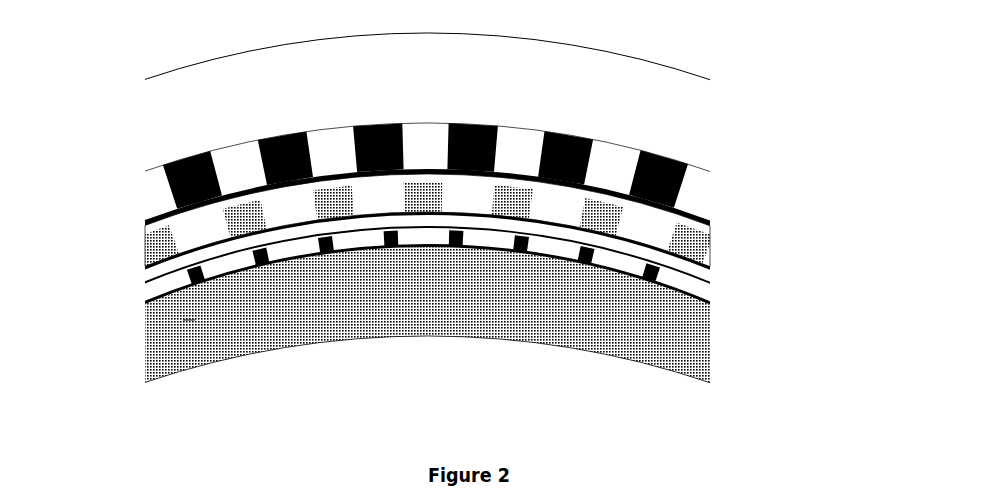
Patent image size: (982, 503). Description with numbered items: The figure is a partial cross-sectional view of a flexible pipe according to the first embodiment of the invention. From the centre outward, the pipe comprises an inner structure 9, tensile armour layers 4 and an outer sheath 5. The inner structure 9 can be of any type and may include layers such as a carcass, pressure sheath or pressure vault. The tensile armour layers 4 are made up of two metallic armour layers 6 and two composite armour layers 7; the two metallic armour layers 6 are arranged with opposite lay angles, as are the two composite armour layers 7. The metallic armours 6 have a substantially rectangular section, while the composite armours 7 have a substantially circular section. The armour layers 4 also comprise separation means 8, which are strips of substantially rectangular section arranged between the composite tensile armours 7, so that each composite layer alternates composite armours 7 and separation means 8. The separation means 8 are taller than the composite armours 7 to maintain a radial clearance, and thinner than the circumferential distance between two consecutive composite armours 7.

The tensile armour layers 4 is at (437, 192).
The outer sheath 5 is at (640, 95).
The metallic armour layers 6 is at (622, 235).
The composite armour layers 7 is at (680, 177).
The separation means 8 is at (608, 155).
The inner structure 9 is at (583, 297).